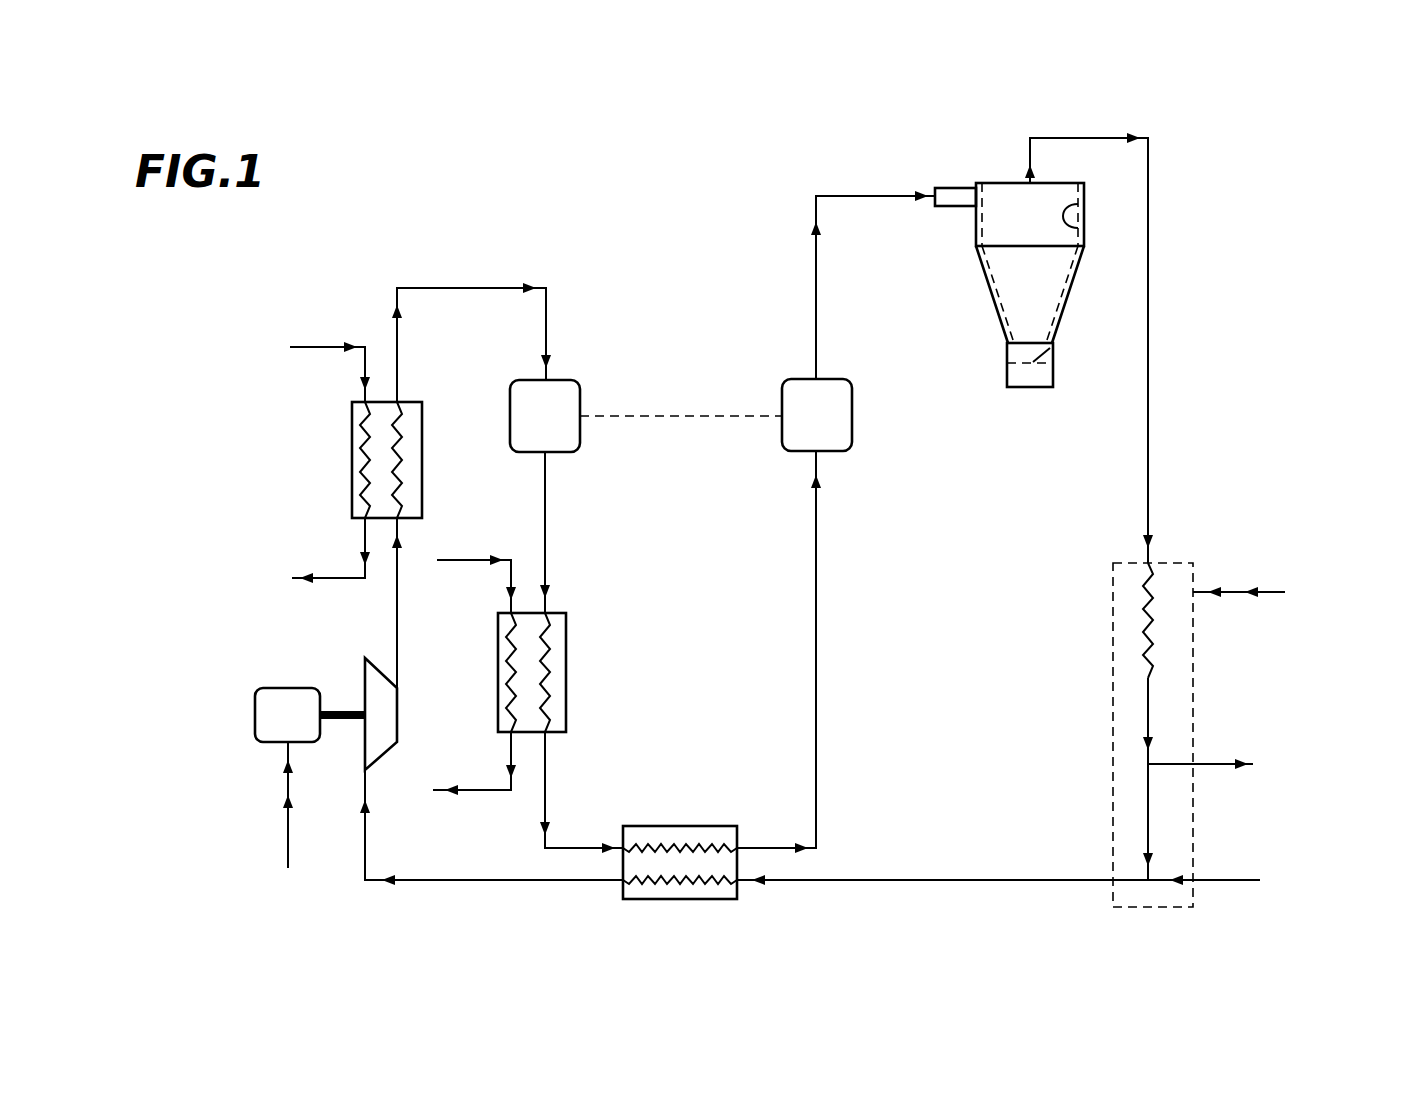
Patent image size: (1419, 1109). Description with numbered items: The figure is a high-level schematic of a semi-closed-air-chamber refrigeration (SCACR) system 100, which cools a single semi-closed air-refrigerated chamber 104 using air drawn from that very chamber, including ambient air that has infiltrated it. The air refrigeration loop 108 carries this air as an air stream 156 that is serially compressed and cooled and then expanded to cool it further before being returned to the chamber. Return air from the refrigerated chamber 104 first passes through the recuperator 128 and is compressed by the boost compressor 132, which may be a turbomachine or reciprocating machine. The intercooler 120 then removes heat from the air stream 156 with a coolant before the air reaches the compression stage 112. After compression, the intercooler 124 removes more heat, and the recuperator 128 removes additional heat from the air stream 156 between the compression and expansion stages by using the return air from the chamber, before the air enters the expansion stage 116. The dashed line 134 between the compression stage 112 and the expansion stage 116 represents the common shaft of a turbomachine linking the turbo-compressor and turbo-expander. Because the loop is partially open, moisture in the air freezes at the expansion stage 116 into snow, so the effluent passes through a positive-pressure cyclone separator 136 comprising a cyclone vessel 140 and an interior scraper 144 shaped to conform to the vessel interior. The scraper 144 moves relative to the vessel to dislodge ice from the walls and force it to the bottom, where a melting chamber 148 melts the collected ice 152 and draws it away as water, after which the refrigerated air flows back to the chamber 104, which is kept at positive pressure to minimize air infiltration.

The semi-closed-air-chamber refrigeration (SCACR) system 100 is at (1315, 160).
The semi-closed air-refrigerated chamber 104 is at (1100, 893).
The air refrigeration loop 108 is at (865, 607).
The compression stage 112 is at (578, 372).
The expansion stage 116 is at (870, 416).
The intercooler 120 is at (342, 452).
The intercooler 124 is at (578, 654).
The recuperator 128 is at (680, 812).
The boost compressor 132 is at (272, 662).
The dashed line 134 is at (675, 418).
The cyclone separator 136 is at (985, 158).
The cyclone vessel 140 is at (982, 303).
The interior scraper 144 is at (1082, 198).
The melting chamber 148 is at (1007, 352).
The collected ice 152 is at (1053, 347).
The air stream 156 is at (470, 288).